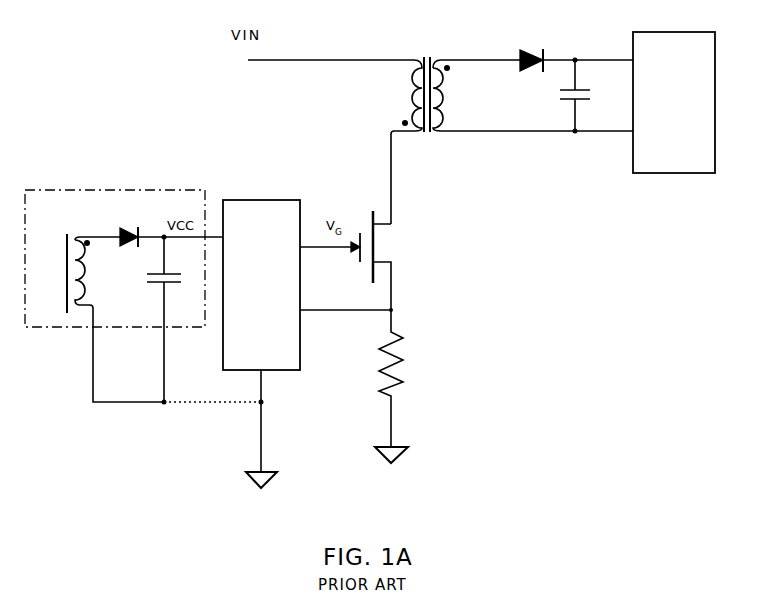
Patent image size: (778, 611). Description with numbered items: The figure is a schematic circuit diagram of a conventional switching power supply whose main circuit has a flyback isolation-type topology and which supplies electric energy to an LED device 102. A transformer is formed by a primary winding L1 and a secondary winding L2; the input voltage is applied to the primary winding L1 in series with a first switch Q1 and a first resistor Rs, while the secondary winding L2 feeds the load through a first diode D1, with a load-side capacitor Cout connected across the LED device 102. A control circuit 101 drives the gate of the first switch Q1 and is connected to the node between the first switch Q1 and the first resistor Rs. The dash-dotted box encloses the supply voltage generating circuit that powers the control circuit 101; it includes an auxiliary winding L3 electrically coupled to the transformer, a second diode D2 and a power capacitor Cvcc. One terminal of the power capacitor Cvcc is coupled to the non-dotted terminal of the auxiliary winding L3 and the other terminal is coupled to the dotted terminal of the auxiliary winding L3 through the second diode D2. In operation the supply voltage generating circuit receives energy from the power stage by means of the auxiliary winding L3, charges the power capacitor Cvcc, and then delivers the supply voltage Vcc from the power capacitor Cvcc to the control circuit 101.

The control circuit 101 is at (278, 294).
The LED device 102 is at (659, 108).
The primary winding L1 is at (401, 142).
The secondary winding L2 is at (533, 95).
The auxiliary winding L3 is at (102, 318).
The first diode D1 is at (573, 51).
The second diode D2 is at (167, 226).
The first switch Q1 is at (393, 260).
The first resistor Rs is at (379, 378).
The load-side capacitor Cout is at (555, 96).
The power capacitor Cvcc is at (142, 319).